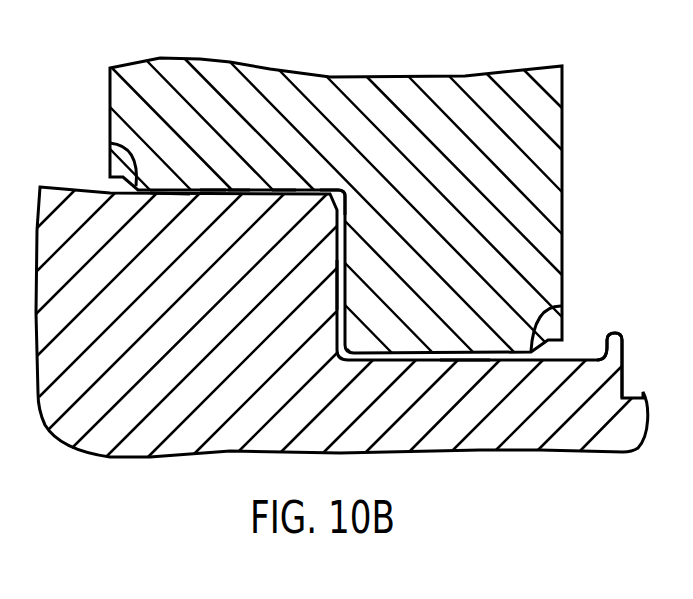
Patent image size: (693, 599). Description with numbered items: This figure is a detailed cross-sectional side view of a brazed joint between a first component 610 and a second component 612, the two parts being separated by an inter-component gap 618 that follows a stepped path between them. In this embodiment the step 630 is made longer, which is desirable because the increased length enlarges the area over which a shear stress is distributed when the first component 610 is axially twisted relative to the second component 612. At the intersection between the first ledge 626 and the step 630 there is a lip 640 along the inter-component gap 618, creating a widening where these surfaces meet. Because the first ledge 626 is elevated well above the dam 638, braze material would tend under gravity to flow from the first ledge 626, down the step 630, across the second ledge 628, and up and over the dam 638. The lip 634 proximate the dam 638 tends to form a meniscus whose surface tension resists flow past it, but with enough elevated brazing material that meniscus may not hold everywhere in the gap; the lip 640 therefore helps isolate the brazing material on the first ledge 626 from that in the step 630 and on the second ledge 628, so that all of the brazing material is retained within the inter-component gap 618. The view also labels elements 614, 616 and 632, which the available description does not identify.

The first component 610 is at (552, 204).
The second component 612 is at (592, 442).
The interface surface 614 is at (284, 191).
The upper surface of second component 616 is at (168, 194).
The inter-component gap 618 is at (213, 187).
The first ledge 626 is at (237, 186).
The second ledge 628 is at (465, 362).
The step 630 is at (338, 284).
The rounded relief on first component 632 is at (112, 143).
The lip 634 is at (559, 304).
The dam 638 is at (617, 343).
The lip 640 is at (332, 191).